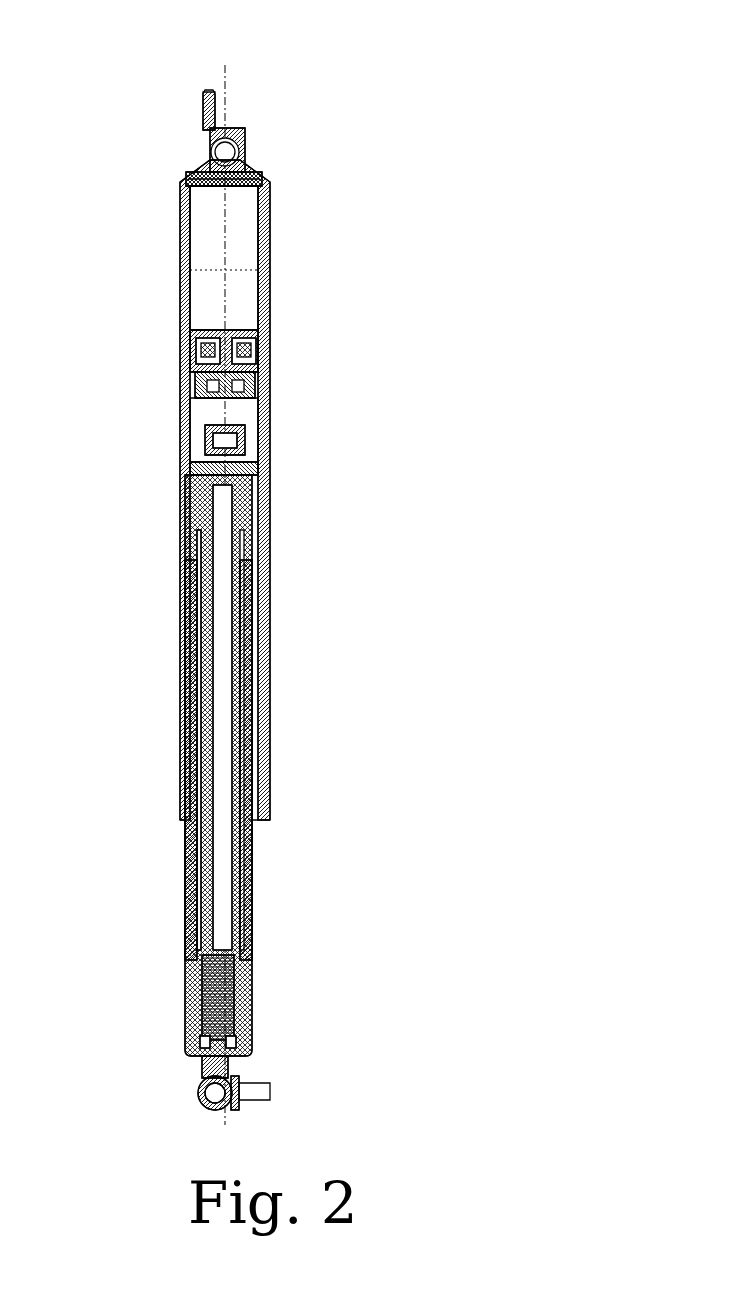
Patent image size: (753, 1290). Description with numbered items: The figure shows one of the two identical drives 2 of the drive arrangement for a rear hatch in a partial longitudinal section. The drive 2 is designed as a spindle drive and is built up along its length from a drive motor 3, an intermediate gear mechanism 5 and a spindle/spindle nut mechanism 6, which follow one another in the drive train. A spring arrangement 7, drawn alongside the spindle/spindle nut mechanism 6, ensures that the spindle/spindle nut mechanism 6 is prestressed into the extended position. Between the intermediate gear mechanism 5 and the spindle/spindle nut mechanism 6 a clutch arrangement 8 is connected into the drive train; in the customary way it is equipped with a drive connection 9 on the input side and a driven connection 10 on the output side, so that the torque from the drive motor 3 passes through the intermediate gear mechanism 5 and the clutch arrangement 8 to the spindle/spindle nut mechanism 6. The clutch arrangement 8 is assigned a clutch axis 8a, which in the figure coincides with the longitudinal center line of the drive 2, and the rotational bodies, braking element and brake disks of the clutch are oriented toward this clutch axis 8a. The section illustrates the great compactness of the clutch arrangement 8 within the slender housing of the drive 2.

The drive 2 is at (483, 283).
The drive motor 3 is at (247, 217).
The intermediate gear mechanism 5 is at (245, 300).
The spindle/spindle nut mechanism 6 is at (325, 455).
The spring arrangement 7 is at (175, 728).
The clutch arrangement 8 is at (247, 420).
The clutch axis 8a is at (230, 100).
The drive connection 9 is at (195, 405).
The driven connection 10 is at (195, 450).